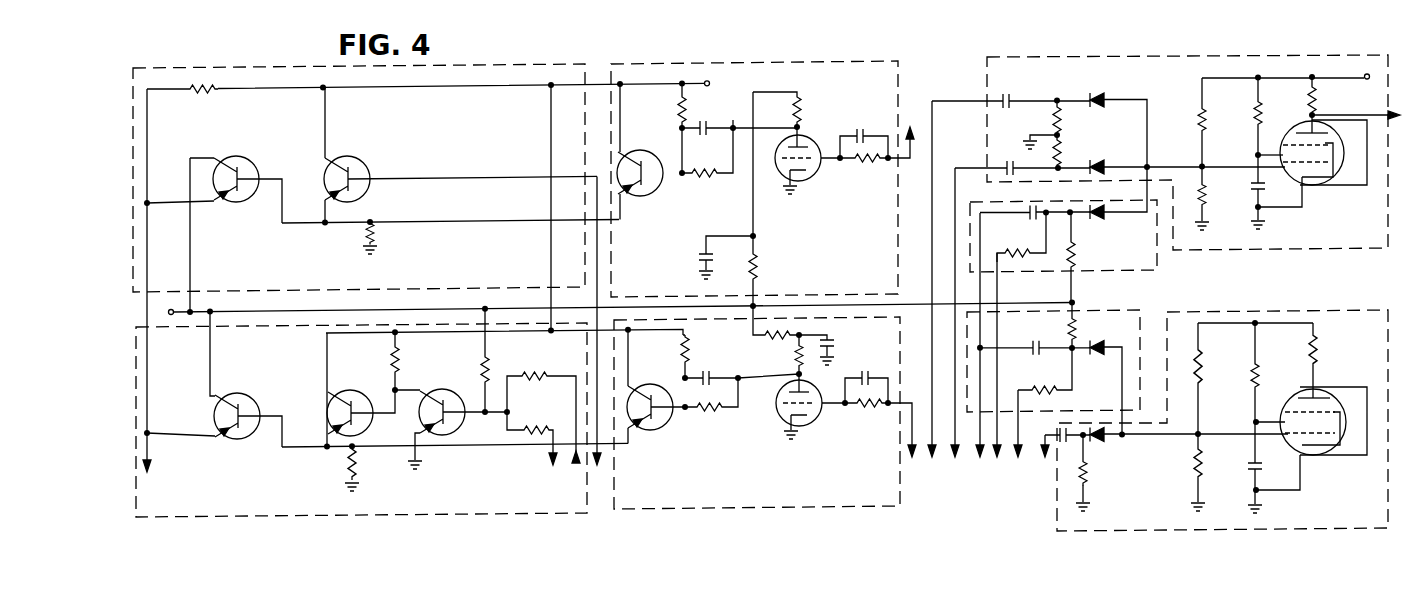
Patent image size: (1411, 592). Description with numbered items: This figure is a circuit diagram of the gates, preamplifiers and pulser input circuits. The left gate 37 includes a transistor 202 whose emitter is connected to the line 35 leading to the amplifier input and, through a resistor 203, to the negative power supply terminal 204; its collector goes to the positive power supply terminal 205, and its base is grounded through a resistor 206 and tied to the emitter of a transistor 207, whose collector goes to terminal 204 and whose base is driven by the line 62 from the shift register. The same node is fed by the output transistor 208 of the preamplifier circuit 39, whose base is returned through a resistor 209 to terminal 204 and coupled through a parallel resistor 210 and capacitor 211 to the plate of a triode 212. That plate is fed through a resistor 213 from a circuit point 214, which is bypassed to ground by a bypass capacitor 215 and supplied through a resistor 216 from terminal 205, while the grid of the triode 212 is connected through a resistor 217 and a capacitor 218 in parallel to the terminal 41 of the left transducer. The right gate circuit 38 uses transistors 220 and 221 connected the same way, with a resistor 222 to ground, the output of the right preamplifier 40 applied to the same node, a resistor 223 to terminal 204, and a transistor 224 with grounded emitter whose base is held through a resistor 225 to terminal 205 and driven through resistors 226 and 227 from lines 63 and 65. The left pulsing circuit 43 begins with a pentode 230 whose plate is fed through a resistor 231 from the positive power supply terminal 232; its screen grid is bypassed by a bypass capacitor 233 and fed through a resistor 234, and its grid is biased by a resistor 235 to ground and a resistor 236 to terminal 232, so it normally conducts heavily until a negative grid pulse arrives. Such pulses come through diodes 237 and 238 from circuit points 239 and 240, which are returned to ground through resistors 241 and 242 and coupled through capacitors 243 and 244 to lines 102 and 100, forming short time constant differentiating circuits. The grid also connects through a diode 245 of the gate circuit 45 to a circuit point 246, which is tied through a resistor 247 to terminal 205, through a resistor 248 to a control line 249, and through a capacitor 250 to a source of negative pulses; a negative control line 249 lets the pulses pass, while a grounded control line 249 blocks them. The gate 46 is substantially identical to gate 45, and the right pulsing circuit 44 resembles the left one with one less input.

The line 35 is at (148, 150).
The gate 37 is at (483, 70).
The right gate circuit 38 is at (220, 518).
The preamplifier circuit 39 is at (790, 64).
The right preamplifier 40 is at (718, 506).
The terminal 41 is at (889, 160).
The left pulsing circuit 43 is at (1195, 60).
The right pulsing circuit 44 is at (1196, 528).
The gate circuit 45 is at (1158, 272).
The gate 46 is at (1140, 318).
The line 62 is at (600, 460).
The line 63 is at (548, 465).
The line 65 is at (576, 465).
The line 100 is at (957, 462).
The line 102 is at (934, 458).
The transistor 202 is at (262, 146).
The resistor 203 is at (211, 84).
The power supply terminal 204 is at (706, 80).
The power supply terminal 205 is at (168, 312).
The resistor 206 is at (378, 249).
The transistor 207 is at (362, 160).
The output transistor 208 is at (651, 196).
The resistor 209 is at (680, 106).
The resistor 210 is at (709, 176).
The capacitor 211 is at (699, 126).
The triode 212 is at (805, 188).
The resistor 213 is at (802, 108).
The circuit point 214 is at (756, 236).
The bypass capacitor 215 is at (700, 258).
The resistor 216 is at (760, 266).
The resistor 217 is at (855, 166).
The capacitor 218 is at (868, 101).
The transistor 220 is at (266, 373).
The transistor 221 is at (366, 392).
The resistor 222 is at (348, 459).
The resistor 223 is at (398, 378).
The transistor 224 is at (447, 447).
The resistor 225 is at (490, 377).
The resistor 226 is at (530, 442).
The resistor 227 is at (536, 383).
The pentode 230 is at (1347, 183).
The resistor 231 is at (1315, 90).
The positive power supply terminal 232 is at (1367, 72).
The bypass capacitor 233 is at (1268, 206).
The resistor 234 is at (1252, 118).
The resistor 235 is at (1205, 186).
The resistor 236 is at (1196, 120).
The diode 237 is at (1097, 93).
The diode 238 is at (1099, 162).
The circuit point 239 is at (1057, 100).
The circuit point 240 is at (1064, 165).
The resistor 241 is at (1050, 112).
The resistor 242 is at (1025, 148).
The capacitor 243 is at (1002, 94).
The capacitor 244 is at (1003, 168).
The diode 245 is at (1098, 220).
The circuit point 246 is at (1073, 212).
The resistor 247 is at (1076, 248).
The resistor 248 is at (1030, 252).
The control line 249 is at (997, 284).
The capacitor 250 is at (1029, 206).